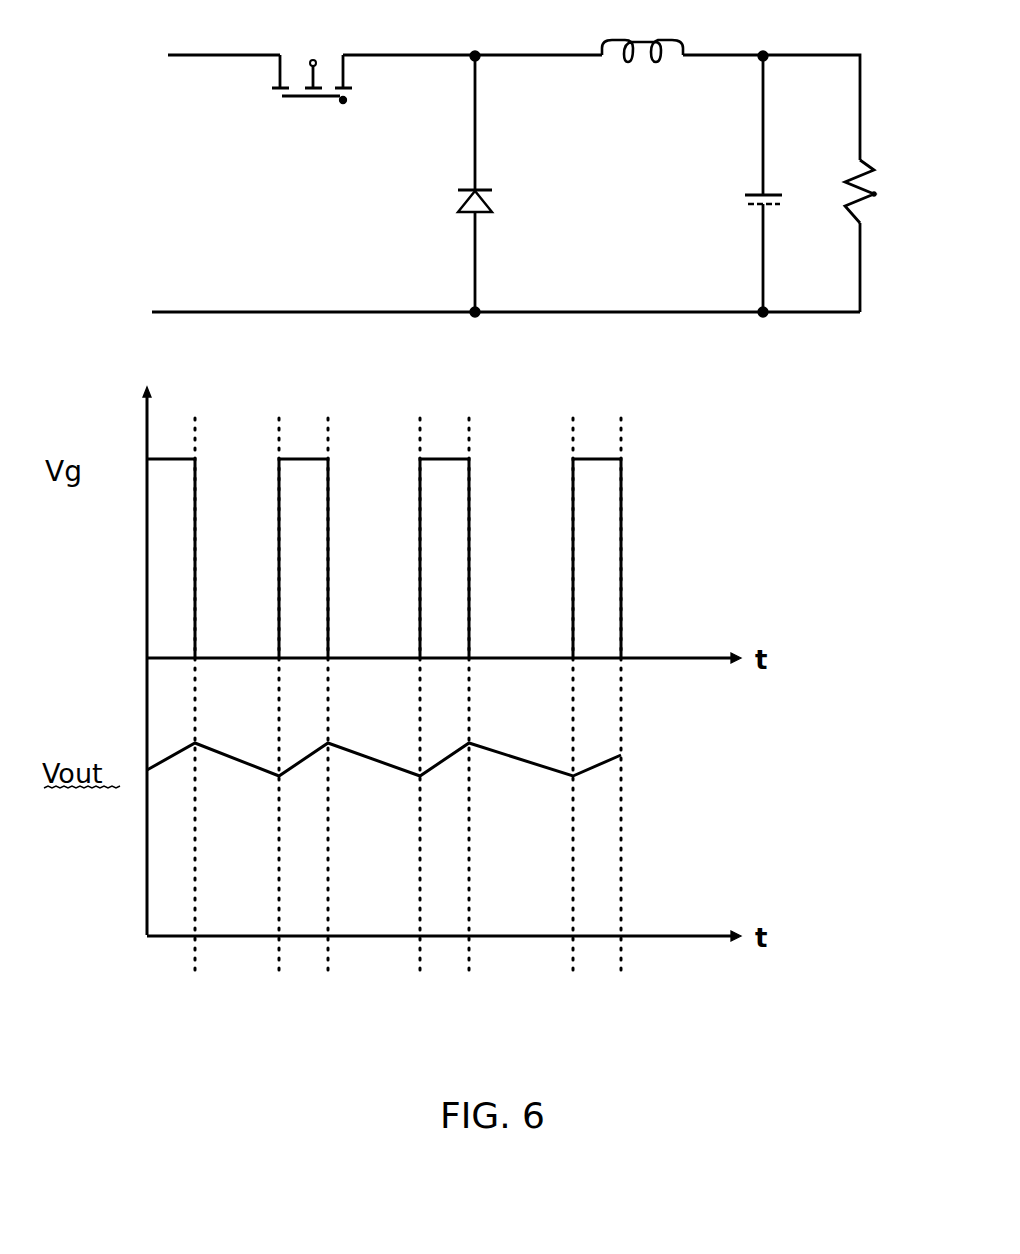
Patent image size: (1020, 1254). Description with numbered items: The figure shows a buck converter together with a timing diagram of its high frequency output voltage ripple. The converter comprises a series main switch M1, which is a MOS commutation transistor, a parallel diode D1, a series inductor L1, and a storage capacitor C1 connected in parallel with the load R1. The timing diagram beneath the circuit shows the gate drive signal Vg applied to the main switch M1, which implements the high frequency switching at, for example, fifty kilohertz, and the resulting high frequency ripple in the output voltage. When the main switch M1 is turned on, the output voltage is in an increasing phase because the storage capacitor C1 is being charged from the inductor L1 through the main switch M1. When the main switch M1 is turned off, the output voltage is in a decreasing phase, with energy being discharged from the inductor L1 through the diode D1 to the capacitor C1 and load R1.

The main switch M1 is at (312, 58).
The diode D1 is at (462, 183).
The inductor L1 is at (642, 52).
The storage capacitor C1 is at (772, 183).
The load R1 is at (876, 191).